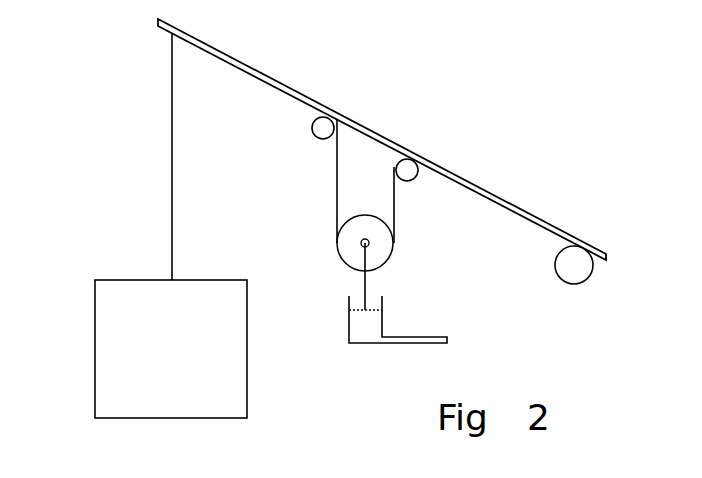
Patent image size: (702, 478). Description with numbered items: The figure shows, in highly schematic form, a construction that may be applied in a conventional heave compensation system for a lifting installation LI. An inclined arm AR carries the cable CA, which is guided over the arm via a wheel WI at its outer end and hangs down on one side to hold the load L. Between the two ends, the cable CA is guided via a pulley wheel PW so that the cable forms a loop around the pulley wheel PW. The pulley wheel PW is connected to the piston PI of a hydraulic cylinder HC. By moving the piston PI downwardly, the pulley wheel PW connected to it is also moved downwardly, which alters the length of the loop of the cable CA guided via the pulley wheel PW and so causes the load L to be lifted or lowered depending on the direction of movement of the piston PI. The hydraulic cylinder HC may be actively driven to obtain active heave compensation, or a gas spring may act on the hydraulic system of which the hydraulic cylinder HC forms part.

The arm AR is at (215, 44).
The lifting installation LI is at (350, 55).
The cable CA is at (168, 150).
The load L is at (200, 420).
The pulley wheel PW is at (357, 217).
The piston PI is at (369, 302).
The hydraulic cylinder HC is at (385, 320).
The wheel WI is at (578, 268).